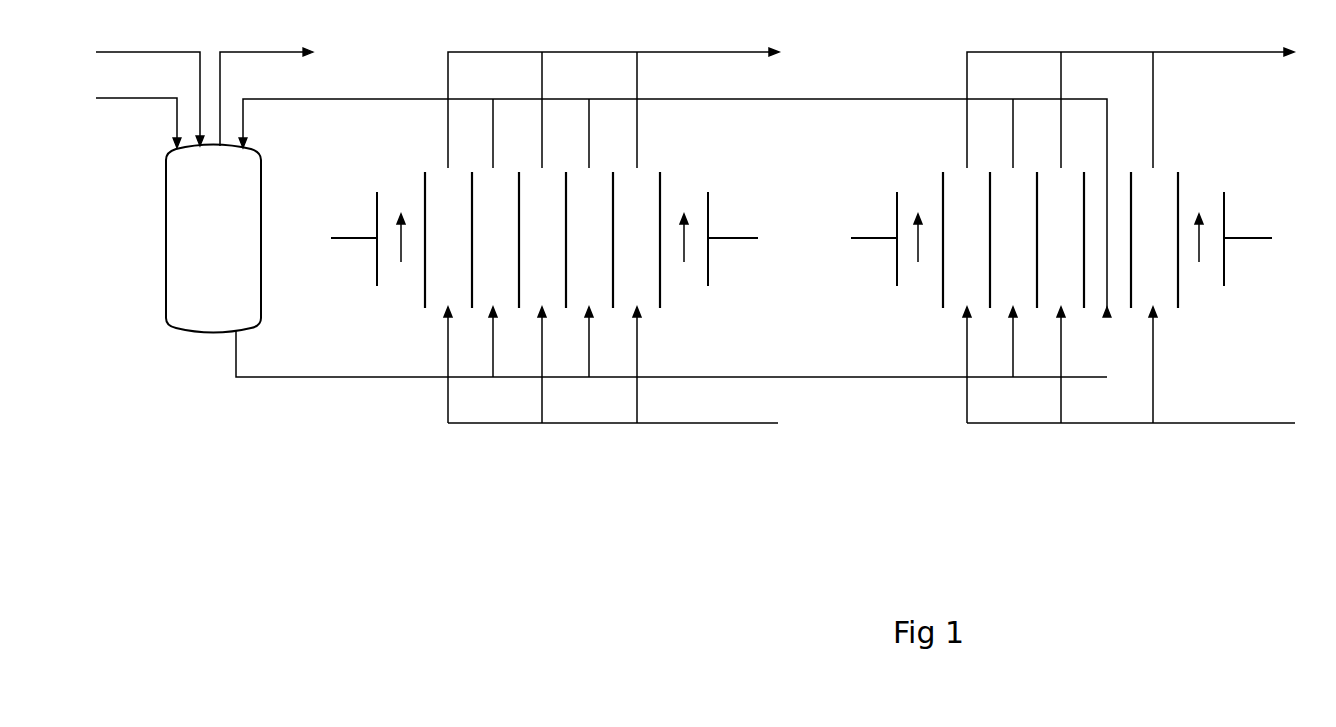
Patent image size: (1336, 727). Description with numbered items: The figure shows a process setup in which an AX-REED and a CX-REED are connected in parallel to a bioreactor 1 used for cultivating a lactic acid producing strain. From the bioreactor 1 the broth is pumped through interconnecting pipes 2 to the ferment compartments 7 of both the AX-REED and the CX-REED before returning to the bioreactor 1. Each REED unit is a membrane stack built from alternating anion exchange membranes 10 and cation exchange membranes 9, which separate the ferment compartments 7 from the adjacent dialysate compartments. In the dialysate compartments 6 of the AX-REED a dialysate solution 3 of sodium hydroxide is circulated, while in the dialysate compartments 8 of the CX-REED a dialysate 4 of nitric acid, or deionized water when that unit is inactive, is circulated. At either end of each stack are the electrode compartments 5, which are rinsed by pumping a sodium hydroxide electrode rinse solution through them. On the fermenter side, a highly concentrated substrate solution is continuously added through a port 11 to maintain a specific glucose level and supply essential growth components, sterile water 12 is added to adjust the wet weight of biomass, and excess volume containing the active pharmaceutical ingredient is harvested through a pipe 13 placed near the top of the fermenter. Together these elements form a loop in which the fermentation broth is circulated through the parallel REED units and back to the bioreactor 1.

The bioreactor 1 is at (198, 239).
The interconnecting pipes 2 is at (671, 371).
The dialysate solution 3 is at (613, 435).
The dialysate 4 is at (1131, 435).
The electrode compartments 5 is at (800, 234).
The dialysate compartments 6 is at (542, 325).
The ferment compartments 7 is at (800, 238).
The dialysate compartments 8 is at (1060, 325).
The cation exchange membranes 9 is at (779, 225).
The anion exchange membranes 10 is at (825, 238).
The port 11 is at (138, 123).
The sterile water 12 is at (150, 99).
The pipe 13 is at (266, 97).